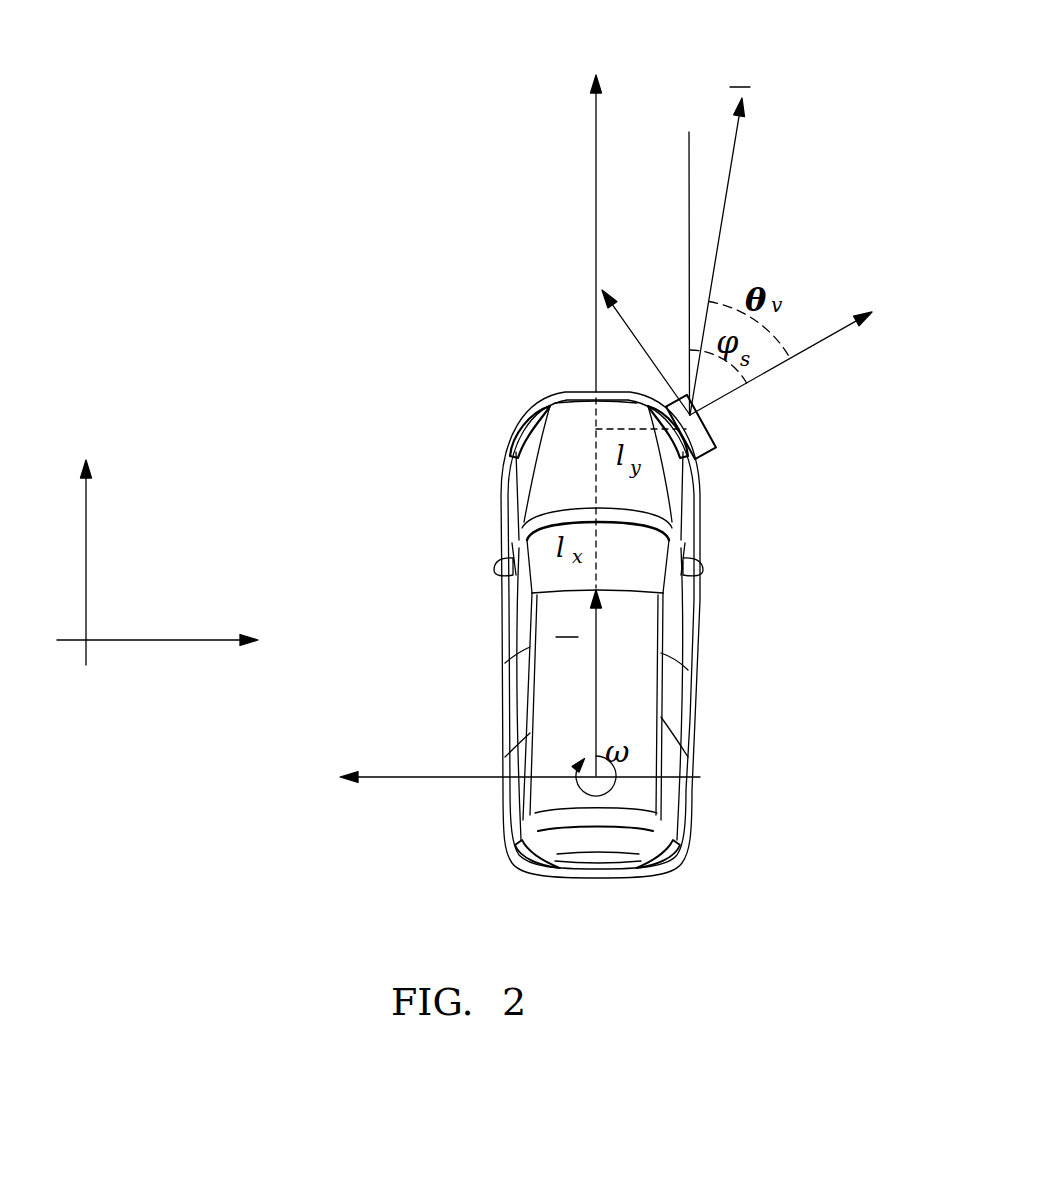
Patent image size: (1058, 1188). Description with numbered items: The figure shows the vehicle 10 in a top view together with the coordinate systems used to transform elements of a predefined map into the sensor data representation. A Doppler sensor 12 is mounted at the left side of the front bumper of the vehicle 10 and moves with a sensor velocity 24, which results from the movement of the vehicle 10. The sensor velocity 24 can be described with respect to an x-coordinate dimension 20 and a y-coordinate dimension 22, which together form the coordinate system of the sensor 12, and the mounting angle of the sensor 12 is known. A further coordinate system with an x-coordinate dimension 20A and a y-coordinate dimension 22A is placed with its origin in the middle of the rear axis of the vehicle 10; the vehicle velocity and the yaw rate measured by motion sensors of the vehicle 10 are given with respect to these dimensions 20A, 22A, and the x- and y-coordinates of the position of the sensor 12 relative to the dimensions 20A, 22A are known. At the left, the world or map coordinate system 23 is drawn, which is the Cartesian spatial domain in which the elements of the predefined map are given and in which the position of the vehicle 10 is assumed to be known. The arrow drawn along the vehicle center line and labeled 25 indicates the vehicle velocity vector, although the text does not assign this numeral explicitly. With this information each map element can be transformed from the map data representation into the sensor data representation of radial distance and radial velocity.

The vehicle 10 is at (712, 855).
The Doppler sensor 12 is at (712, 456).
The x-coordinate dimension 20 is at (794, 357).
The x-coordinate dimension 20A is at (596, 160).
The y-coordinate dimension 22 is at (645, 360).
The y-coordinate dimension 22A is at (420, 777).
The world or map coordinate system 23 is at (64, 660).
The sensor velocity 24 is at (733, 165).
The vehicle velocity vector 25 is at (598, 665).